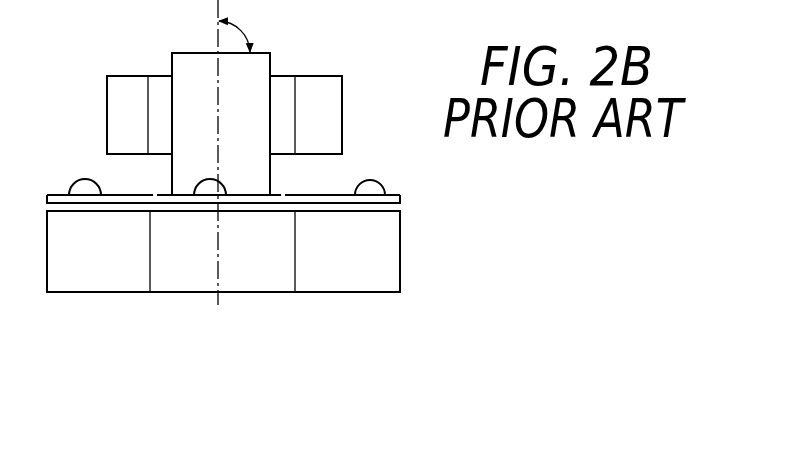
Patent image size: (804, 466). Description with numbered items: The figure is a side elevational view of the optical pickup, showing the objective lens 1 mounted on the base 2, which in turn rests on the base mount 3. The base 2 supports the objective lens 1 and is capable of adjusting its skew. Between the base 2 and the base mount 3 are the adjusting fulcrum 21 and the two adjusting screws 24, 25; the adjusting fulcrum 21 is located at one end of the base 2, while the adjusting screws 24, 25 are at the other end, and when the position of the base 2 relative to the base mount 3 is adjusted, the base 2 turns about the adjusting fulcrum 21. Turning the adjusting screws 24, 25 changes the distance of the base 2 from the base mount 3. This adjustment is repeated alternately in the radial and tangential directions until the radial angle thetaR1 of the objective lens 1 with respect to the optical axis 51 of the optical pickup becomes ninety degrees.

The objective lens 1 is at (272, 56).
The base 2 is at (400, 195).
The base mount 3 is at (400, 235).
The adjusting fulcrum 21 is at (197, 182).
The adjusting screw 24 is at (84, 180).
The adjusting screw 25 is at (370, 181).
The optical axis 51 is at (216, 28).
The angle θR1 thetaR1 is at (249, 29).